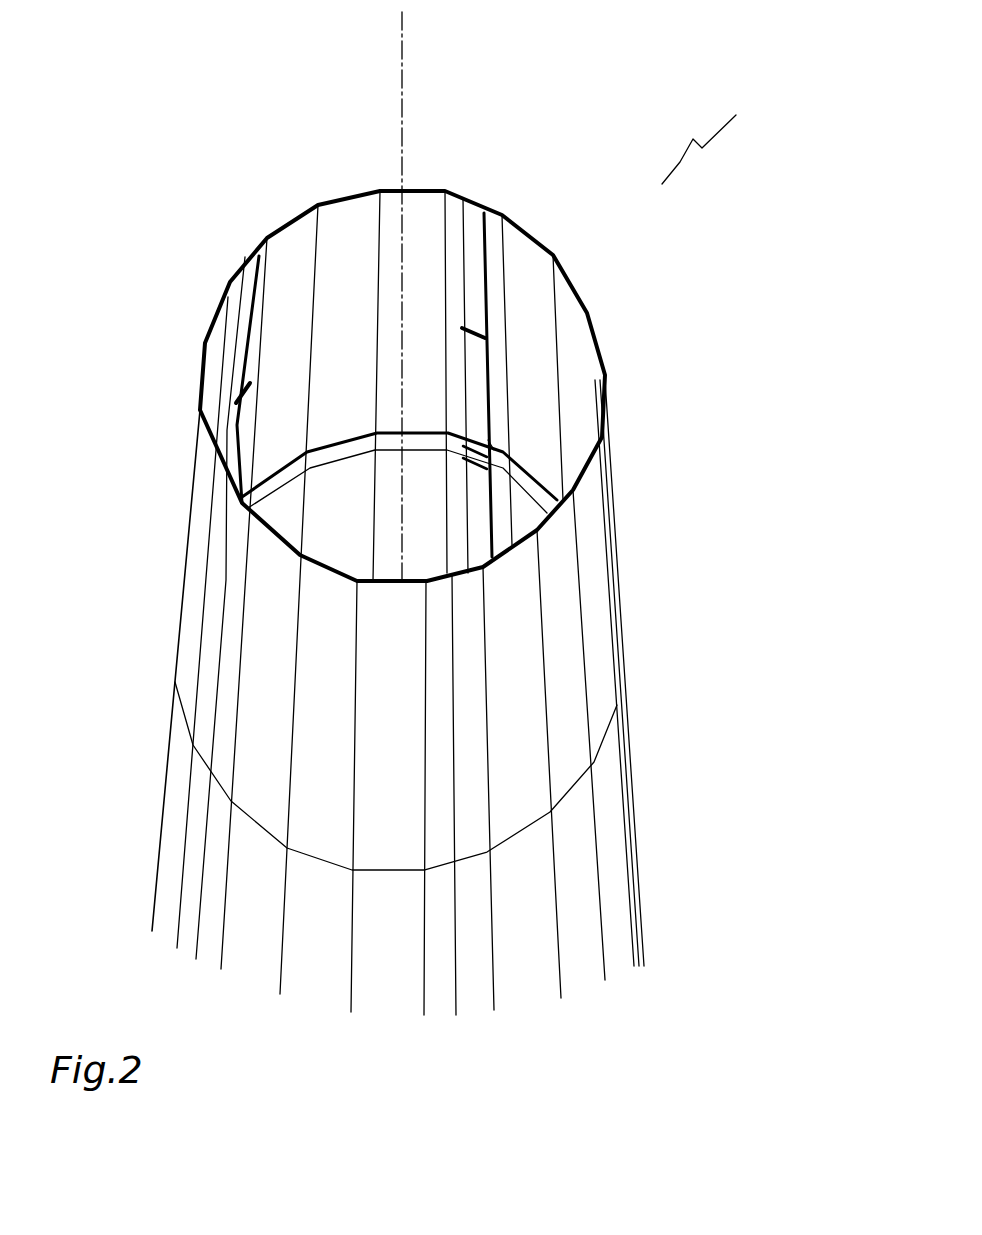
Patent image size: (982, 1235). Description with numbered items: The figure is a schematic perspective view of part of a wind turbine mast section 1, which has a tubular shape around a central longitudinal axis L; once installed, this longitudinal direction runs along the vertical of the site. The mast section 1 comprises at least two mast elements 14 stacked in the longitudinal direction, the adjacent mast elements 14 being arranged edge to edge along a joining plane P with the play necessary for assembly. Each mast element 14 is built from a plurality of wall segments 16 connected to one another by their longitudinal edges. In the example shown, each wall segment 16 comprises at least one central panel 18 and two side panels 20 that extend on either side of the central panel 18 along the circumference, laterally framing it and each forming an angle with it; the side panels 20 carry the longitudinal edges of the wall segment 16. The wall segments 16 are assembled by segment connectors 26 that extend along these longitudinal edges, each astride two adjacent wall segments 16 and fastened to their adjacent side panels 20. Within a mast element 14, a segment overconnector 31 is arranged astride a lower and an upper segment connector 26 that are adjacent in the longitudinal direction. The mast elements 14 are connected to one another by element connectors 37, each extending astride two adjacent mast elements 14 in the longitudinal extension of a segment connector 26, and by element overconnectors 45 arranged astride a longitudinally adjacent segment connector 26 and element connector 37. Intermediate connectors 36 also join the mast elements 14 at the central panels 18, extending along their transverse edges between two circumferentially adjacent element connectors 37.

The mast section 1 is at (654, 191).
The mast element 14 is at (628, 578).
The wall segment 16 is at (502, 108).
The central panel 18 is at (297, 245).
The side panel 20 is at (270, 234).
The segment connector 26 is at (235, 285).
The segment overconnector 31 is at (462, 346).
The intermediate connector 36 is at (521, 478).
The element connector 37 is at (491, 466).
The element overconnector 45 is at (478, 443).
The central longitudinal axis L is at (413, 292).
The joining plane P is at (607, 730).